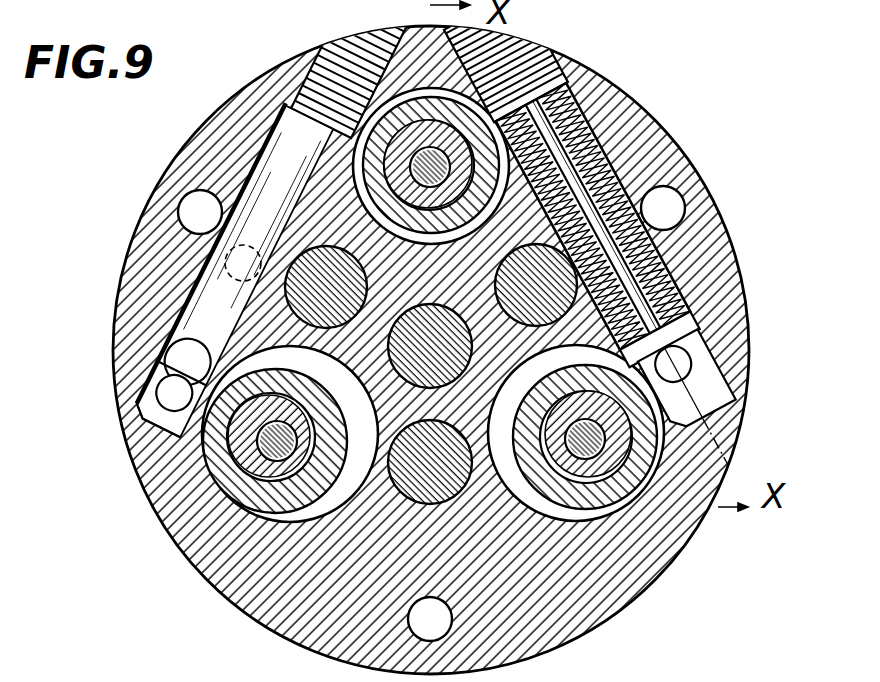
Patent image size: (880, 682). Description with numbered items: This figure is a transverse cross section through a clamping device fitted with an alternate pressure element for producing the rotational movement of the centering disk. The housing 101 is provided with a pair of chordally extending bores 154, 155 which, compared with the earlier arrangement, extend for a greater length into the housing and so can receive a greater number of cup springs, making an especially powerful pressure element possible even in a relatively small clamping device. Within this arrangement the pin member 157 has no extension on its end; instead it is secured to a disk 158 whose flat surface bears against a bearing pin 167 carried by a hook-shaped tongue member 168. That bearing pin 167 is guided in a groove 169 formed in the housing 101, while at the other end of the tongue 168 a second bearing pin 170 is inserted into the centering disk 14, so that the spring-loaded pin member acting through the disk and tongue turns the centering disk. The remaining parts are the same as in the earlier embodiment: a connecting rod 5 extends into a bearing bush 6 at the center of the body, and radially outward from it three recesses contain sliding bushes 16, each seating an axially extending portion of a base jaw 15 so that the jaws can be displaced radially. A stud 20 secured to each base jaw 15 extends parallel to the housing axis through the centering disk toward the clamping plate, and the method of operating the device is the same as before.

The housing 101 is at (212, 128).
The chordally extending bore 154 is at (269, 223).
The chordally extending bore 155 is at (573, 184).
The pin member 157 is at (593, 216).
The disk 158 is at (679, 374).
The bearing pin 167 is at (169, 399).
The hook-shaped tongue member 168 is at (174, 393).
The groove 169 is at (188, 362).
The bearing pin 170 is at (228, 262).
The centering disk 14 is at (288, 344).
The stud 20 is at (252, 458).
The sliding bush 16 is at (313, 490).
The base jaw 15 is at (283, 458).
The bearing bush 6 is at (402, 318).
The connecting rod 5 is at (440, 392).